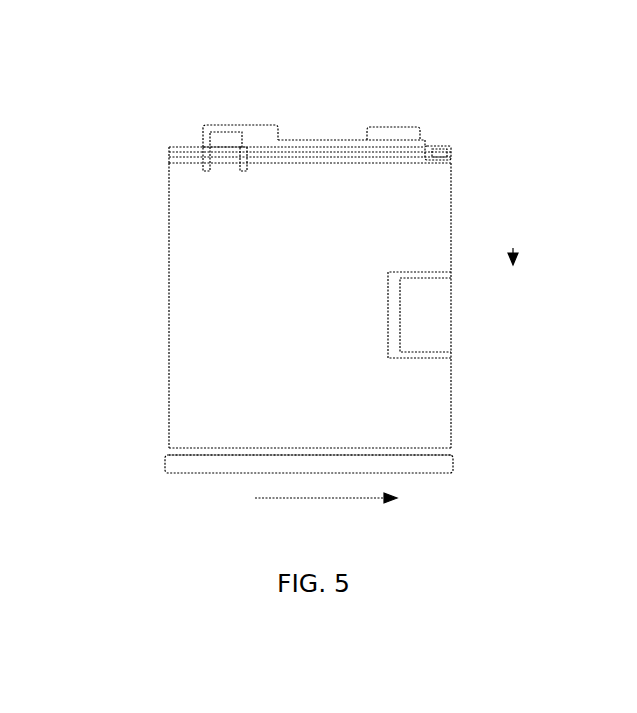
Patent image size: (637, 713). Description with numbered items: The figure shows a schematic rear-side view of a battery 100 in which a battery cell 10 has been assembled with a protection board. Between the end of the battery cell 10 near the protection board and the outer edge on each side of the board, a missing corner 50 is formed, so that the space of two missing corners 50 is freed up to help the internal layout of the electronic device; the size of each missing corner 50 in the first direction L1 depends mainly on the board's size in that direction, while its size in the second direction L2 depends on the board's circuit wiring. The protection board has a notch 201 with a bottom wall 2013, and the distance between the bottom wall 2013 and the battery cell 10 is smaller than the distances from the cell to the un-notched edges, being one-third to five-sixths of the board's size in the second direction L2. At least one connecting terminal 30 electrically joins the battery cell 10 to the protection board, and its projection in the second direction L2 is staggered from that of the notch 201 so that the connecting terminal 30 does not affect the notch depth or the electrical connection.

The battery 100 is at (130, 50).
The battery cell 10 is at (387, 252).
The notch 201 is at (297, 142).
The bottom wall 2013 is at (355, 139).
The missing corner 50 is at (182, 146).
The connecting terminal 30 is at (210, 165).
The first direction L1 is at (326, 514).
The second direction L2 is at (530, 237).